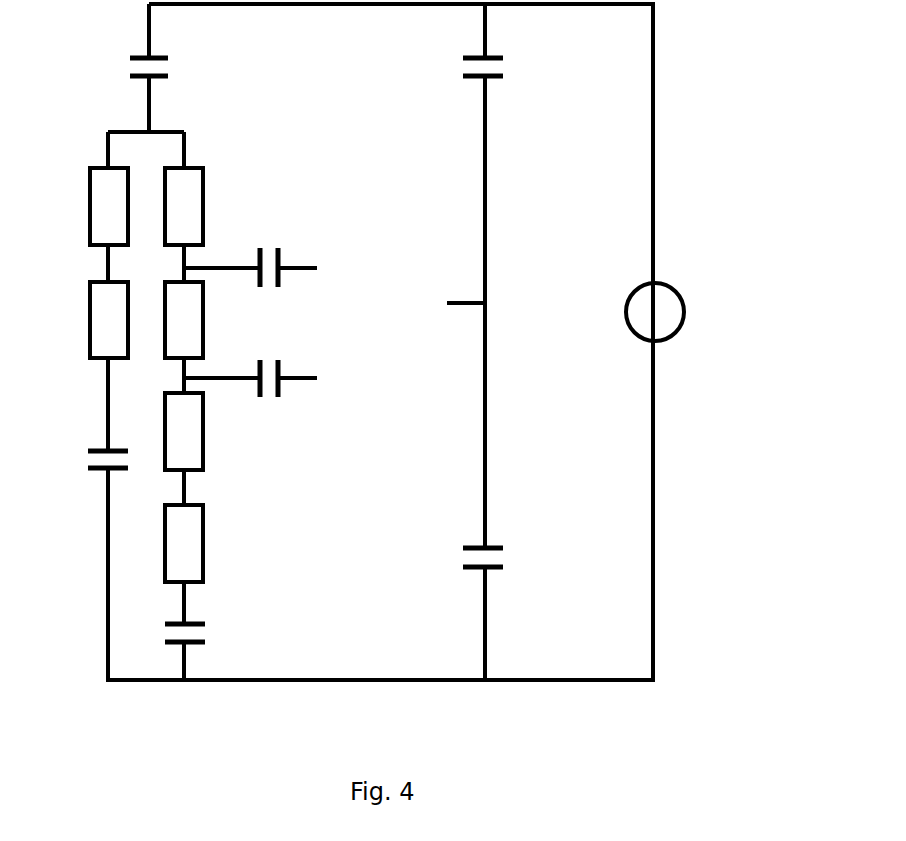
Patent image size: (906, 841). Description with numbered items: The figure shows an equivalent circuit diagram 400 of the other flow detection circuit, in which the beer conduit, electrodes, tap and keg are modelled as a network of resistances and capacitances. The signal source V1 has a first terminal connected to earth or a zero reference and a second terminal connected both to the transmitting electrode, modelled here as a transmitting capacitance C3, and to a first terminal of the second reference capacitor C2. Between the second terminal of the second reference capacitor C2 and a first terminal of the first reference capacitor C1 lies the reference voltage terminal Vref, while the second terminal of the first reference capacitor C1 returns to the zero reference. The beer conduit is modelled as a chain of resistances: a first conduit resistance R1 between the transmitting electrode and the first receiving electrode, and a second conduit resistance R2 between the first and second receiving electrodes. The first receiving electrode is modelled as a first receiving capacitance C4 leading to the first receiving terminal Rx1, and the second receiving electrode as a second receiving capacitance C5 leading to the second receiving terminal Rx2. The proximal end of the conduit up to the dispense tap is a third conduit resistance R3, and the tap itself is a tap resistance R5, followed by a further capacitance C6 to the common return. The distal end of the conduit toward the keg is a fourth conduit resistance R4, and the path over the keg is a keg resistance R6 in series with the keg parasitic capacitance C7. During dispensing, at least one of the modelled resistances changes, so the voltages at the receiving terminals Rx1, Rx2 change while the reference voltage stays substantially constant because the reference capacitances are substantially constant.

The equivalent circuit diagram 400 is at (778, 693).
The first reference capacitor C1 is at (508, 614).
The second reference capacitor C2 is at (511, 276).
The transmitting capacitance C3 is at (122, 108).
The first receiving capacitance C4 is at (240, 249).
The second receiving capacitance C5 is at (240, 396).
The capacitor C6 is at (203, 652).
The keg parasitic capacitance C7 is at (84, 455).
The first conduit resistance R1 is at (203, 225).
The second conduit resistance R2 is at (203, 337).
The third conduit resistance R3 is at (203, 449).
The fourth conduit resistance R4 is at (89, 225).
The tap resistance R5 is at (203, 564).
The keg resistance R6 is at (89, 366).
The first receiving terminal Rx1 is at (327, 271).
The second receiving terminal Rx2 is at (327, 381).
The reference voltage terminal Vref is at (438, 306).
The signal source V1 is at (686, 312).